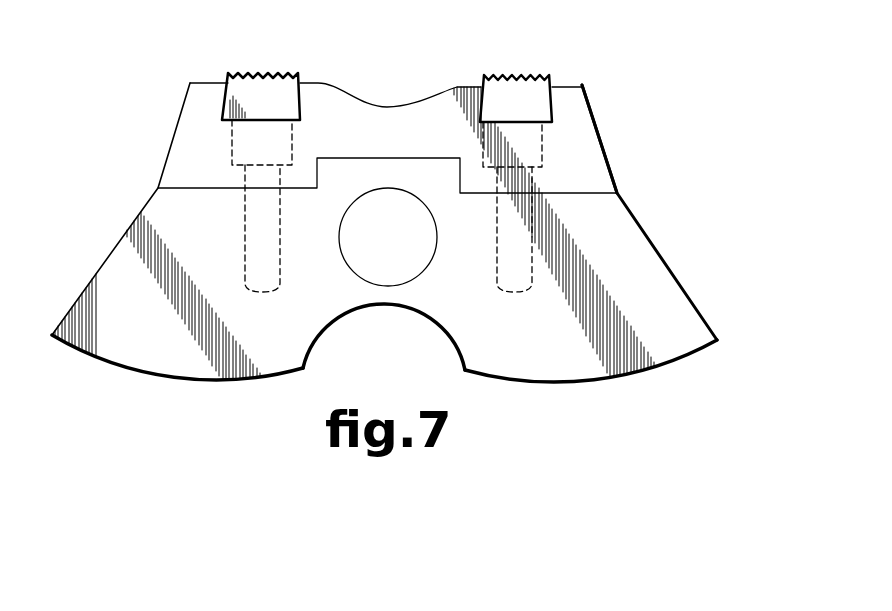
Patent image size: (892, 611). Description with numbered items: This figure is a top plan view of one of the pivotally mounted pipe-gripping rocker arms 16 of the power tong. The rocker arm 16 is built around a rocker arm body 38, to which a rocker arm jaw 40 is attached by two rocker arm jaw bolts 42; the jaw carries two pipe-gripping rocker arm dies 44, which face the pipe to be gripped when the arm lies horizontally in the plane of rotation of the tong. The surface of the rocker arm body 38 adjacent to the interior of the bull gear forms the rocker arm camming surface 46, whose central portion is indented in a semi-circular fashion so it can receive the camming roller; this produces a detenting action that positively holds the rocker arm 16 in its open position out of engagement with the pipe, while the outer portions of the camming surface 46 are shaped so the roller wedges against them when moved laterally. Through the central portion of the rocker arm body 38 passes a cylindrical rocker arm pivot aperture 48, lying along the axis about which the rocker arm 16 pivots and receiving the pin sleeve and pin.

The rocker arm 16 is at (377, 314).
The rocker arm body 38 is at (652, 298).
The rocker arm jaw 40 is at (597, 147).
The rocker arm jaw bolts 42 is at (260, 152).
The pipe-gripping rocker arm dies 44 is at (485, 76).
The rocker arm camming surface 46 is at (197, 382).
The rocker arm pivot aperture 48 is at (343, 254).